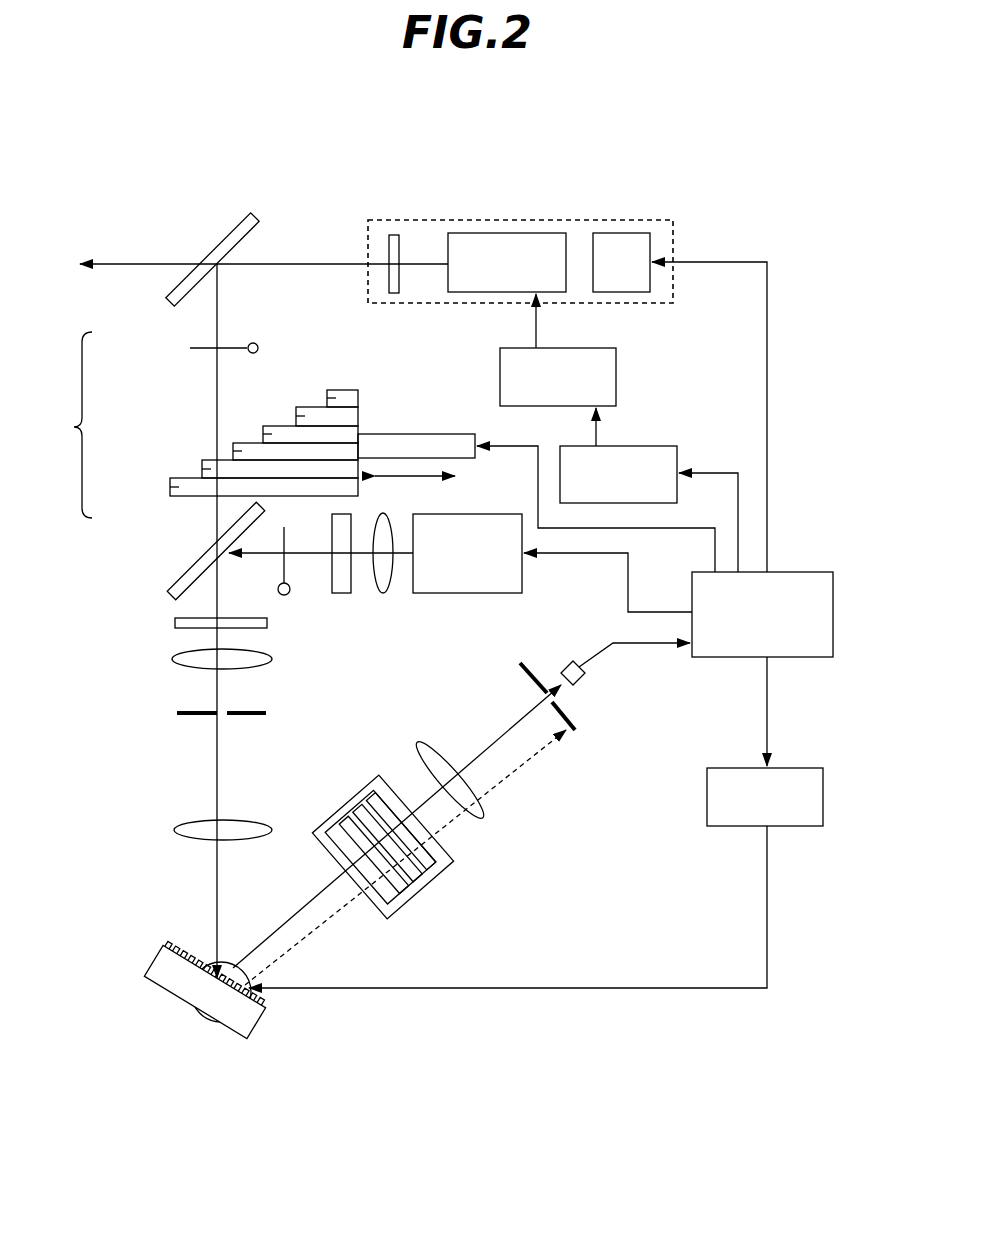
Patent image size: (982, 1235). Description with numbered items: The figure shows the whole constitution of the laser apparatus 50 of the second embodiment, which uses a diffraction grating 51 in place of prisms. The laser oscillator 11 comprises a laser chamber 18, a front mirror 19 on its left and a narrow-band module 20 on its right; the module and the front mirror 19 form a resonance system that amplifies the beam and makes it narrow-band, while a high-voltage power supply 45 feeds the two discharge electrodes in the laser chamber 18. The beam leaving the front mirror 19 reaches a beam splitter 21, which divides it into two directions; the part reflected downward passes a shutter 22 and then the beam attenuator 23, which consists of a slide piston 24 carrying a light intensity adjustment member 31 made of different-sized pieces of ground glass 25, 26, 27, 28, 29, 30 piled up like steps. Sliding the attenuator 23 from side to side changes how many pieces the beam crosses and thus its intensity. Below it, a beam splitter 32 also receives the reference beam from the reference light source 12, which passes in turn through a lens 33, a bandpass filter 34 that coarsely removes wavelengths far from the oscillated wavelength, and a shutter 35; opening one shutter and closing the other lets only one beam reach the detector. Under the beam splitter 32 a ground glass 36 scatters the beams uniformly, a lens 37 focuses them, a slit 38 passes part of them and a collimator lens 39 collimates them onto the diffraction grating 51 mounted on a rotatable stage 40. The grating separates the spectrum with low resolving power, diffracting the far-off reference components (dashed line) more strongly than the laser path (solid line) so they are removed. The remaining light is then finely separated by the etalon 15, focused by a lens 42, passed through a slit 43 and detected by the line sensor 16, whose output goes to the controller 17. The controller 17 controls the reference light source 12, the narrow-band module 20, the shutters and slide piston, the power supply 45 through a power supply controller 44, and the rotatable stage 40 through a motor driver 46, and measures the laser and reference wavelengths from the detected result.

The laser oscillator 11 is at (438, 220).
The reference light source 12 is at (467, 593).
The etalon 15 is at (440, 880).
The line sensor 16 is at (587, 682).
The controller 17 is at (833, 592).
The laser chamber 18 is at (528, 233).
The front mirror 19 is at (394, 235).
The narrow-band module 20 is at (616, 233).
The beam splitter 21 is at (232, 236).
The shutter 22 is at (240, 346).
The beam attenuator 23 is at (239, 415).
The slide piston 24 is at (410, 442).
The ground glass 25 is at (332, 398).
The ground glass 26 is at (301, 416).
The ground glass 27 is at (268, 434).
The ground glass 28 is at (238, 451).
The ground glass 29 is at (207, 469).
The ground glass 30 is at (176, 487).
The light intensity adjustment member 31 is at (62, 425).
The beam splitter 32 is at (192, 562).
The lens 33 is at (383, 593).
The bandpass filter 34 is at (342, 593).
The shutter 35 is at (285, 595).
The ground glass 36 is at (175, 623).
The lens 37 is at (172, 659).
The slit 38 is at (187, 716).
The collimator lens 39 is at (178, 828).
The rotatable stage 40 is at (206, 962).
The lens 42 is at (484, 807).
The slit 43 is at (522, 674).
The power supply controller 44 is at (677, 450).
The high-voltage power supply 45 is at (616, 372).
The motor driver 46 is at (823, 785).
The laser apparatus 50 is at (500, 139).
The diffraction grating 51 is at (255, 1030).